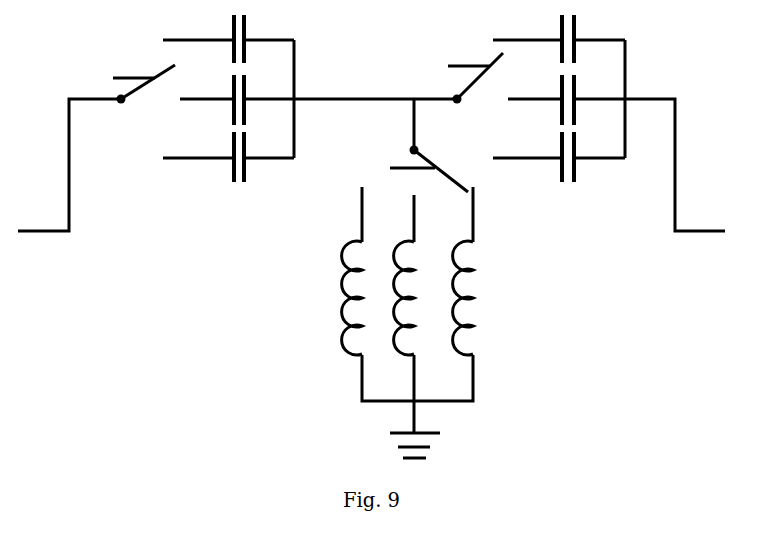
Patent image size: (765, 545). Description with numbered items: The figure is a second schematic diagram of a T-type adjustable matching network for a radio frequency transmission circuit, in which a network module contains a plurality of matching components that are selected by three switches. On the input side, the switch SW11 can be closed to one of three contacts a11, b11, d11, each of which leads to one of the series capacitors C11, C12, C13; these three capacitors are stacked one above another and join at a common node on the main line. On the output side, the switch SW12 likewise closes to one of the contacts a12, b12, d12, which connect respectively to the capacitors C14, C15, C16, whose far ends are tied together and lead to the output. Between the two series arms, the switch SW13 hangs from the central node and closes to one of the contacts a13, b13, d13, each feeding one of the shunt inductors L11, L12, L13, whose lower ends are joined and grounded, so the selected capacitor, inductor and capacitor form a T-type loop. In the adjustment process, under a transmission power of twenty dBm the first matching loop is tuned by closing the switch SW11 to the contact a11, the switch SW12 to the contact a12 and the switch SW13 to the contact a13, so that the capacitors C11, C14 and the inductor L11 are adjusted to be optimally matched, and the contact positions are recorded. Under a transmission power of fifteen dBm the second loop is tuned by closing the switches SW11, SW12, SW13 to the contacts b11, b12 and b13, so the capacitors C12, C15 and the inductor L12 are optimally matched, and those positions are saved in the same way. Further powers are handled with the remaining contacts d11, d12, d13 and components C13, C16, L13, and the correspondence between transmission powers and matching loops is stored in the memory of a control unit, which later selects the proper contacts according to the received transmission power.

The switch SW11 is at (117, 82).
The switch SW12 is at (451, 78).
The switch SW13 is at (410, 145).
The capacitor C11 is at (263, 39).
The capacitor C12 is at (263, 100).
The capacitor C13 is at (263, 157).
The capacitor C14 is at (590, 39).
The capacitor C15 is at (590, 100).
The capacitor C16 is at (590, 157).
The inductor L11 is at (332, 298).
The inductor L12 is at (423, 298).
The inductor L13 is at (485, 298).
The contact a11 is at (198, 30).
The contact b11 is at (203, 112).
The contact d11 is at (195, 174).
The contact a12 is at (510, 27).
The contact b12 is at (518, 111).
The contact d12 is at (512, 168).
The contact a13 is at (337, 210).
The contact b13 is at (395, 215).
The contact d13 is at (495, 214).